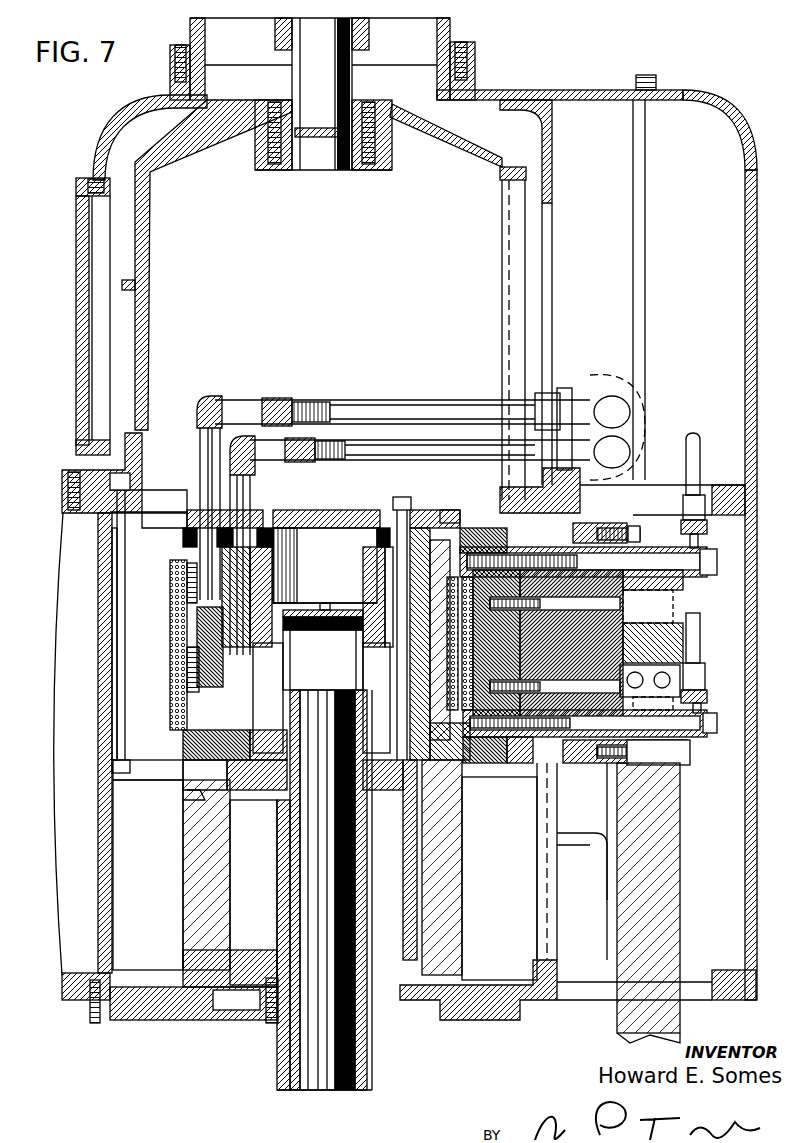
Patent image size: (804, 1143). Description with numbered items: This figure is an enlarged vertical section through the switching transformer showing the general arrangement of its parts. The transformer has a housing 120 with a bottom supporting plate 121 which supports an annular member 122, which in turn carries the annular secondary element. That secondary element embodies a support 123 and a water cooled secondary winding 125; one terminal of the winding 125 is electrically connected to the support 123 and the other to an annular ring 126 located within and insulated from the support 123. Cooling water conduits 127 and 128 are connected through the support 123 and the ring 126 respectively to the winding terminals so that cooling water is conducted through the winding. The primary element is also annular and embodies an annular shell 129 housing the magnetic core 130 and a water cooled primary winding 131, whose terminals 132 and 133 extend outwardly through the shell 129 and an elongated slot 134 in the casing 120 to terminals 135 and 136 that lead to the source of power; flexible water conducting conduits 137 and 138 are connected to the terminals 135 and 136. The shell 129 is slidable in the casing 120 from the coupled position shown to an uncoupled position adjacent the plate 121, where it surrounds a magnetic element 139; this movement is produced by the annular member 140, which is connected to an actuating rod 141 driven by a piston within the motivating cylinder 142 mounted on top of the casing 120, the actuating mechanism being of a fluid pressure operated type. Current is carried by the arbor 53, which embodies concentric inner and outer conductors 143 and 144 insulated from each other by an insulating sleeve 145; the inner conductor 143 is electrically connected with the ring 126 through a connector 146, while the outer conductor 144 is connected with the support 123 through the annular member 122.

The arbor 53 is at (380, 1091).
The housing 120 is at (98, 822).
The bottom supporting plate 121 is at (172, 1010).
The annular member 122 is at (258, 992).
The support 123 is at (329, 698).
The water cooled secondary winding 125 is at (470, 706).
The annular ring 126 is at (276, 552).
The cooling water conduit 127 is at (460, 407).
The cooling water conduit 128 is at (439, 446).
The annular shell 129 is at (112, 650).
The magnetic core 130 is at (145, 735).
The water cooled primary winding 131 is at (172, 672).
The terminal 132 is at (592, 528).
The terminal 133 is at (566, 740).
The elongated slot 134 is at (552, 888).
The terminal 135 is at (638, 535).
The terminal 136 is at (680, 735).
The flexible water conducting conduit 137 is at (697, 455).
The flexible water conducting conduit 138 is at (697, 632).
The magnetic element 139 is at (192, 887).
The annular member 140 is at (145, 268).
The actuating rod 141 is at (320, 135).
The motivating cylinder 142 is at (360, 18).
The inner conductor 143 is at (318, 1080).
The outer conductor 144 is at (370, 1066).
The insulating sleeve 145 is at (370, 1040).
The connector 146 is at (290, 645).